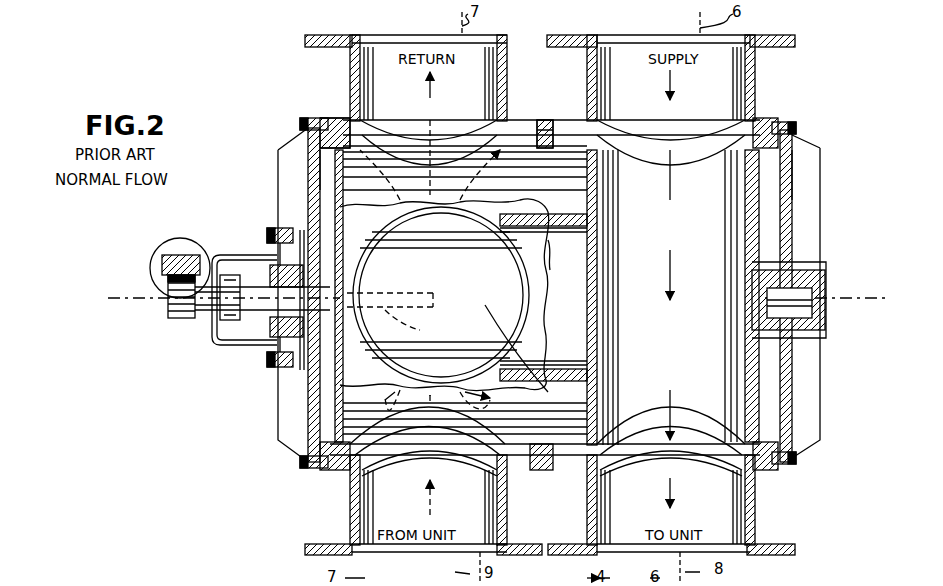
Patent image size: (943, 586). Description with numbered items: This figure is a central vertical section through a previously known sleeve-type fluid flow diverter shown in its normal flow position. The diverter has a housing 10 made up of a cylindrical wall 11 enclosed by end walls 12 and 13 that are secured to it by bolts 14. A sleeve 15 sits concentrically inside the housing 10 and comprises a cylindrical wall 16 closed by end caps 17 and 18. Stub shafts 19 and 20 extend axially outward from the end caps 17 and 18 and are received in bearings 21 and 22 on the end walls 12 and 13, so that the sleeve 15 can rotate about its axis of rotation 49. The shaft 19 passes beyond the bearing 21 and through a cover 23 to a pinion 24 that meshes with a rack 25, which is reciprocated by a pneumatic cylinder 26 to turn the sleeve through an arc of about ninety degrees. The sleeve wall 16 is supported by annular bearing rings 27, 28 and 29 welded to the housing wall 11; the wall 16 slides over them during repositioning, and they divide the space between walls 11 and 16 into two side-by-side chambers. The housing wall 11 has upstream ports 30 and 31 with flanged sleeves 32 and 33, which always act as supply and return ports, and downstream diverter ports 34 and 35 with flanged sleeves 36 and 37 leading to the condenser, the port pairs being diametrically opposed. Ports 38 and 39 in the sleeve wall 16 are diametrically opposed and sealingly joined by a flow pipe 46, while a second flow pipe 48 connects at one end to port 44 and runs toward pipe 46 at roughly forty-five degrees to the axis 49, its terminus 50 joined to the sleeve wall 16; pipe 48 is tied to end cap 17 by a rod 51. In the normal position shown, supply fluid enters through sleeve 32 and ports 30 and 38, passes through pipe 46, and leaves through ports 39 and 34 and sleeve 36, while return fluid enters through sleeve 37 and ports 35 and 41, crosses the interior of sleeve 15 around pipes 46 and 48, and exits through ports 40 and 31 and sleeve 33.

The housing 10 is at (322, 118).
The cylindrical wall 11 is at (334, 118).
The end wall 12 is at (308, 130).
The end wall 13 is at (792, 160).
The bolts 14 is at (300, 124).
The sleeve 15 is at (575, 135).
The cylindrical wall 16 is at (320, 160).
The end cap 17 is at (335, 416).
The end cap 18 is at (760, 380).
The stub shaft 19 is at (268, 325).
The stub shaft 20 is at (825, 326).
The bearing 21 is at (280, 367).
The bearing 22 is at (800, 332).
The cover 23 is at (215, 343).
The pinion 24 is at (180, 318).
The rack 25 is at (185, 265).
The pneumatic cylinder 26 is at (150, 262).
The annular bearing ring 27 is at (335, 470).
The annular bearing ring 28 is at (555, 470).
The annular bearing ring 29 is at (765, 470).
The supply port 30 is at (650, 103).
The return port 31 is at (468, 103).
The flanged sleeve 32 is at (758, 73).
The flanged sleeve 33 is at (350, 48).
The downstream diverter port 34 is at (650, 497).
The downstream diverter port 35 is at (468, 499).
The flanged sleeve 36 is at (758, 520).
The flanged sleeve 37 is at (350, 520).
The port 38 is at (680, 175).
The port 39 is at (700, 418).
The port 40 is at (432, 146).
The port 41 is at (398, 392).
The port 44 is at (395, 232).
The flow pipe 46 is at (565, 228).
The flow pipe 48 is at (560, 212).
The axis of rotation 49 is at (128, 298).
The terminus 50 is at (548, 235).
The rod 51 is at (420, 331).